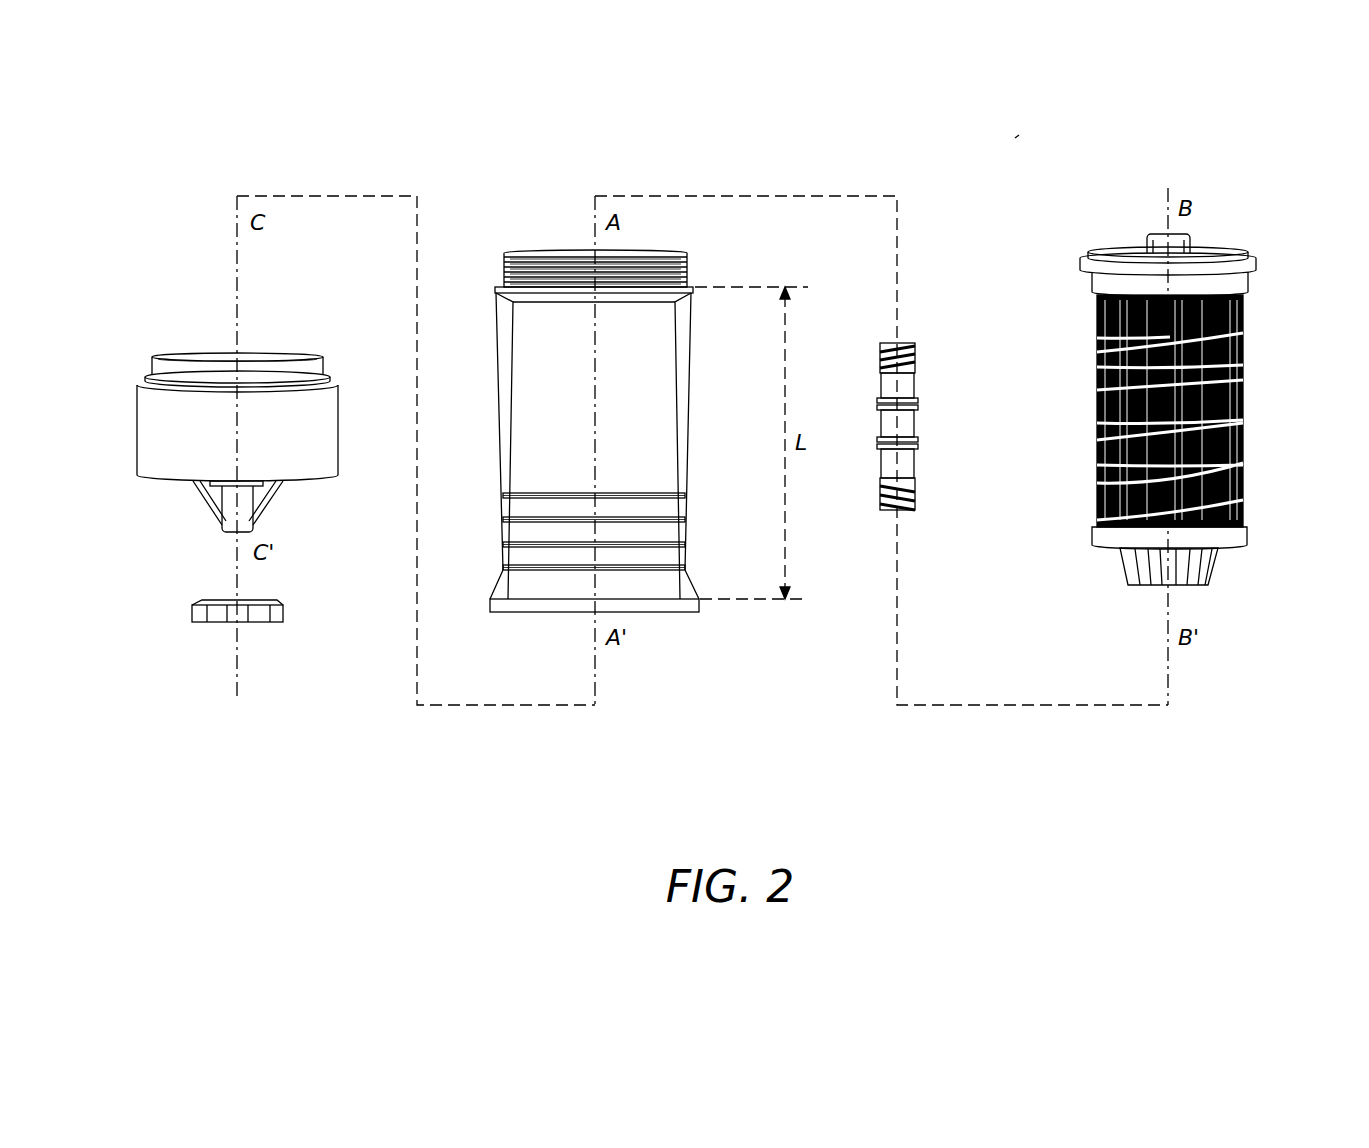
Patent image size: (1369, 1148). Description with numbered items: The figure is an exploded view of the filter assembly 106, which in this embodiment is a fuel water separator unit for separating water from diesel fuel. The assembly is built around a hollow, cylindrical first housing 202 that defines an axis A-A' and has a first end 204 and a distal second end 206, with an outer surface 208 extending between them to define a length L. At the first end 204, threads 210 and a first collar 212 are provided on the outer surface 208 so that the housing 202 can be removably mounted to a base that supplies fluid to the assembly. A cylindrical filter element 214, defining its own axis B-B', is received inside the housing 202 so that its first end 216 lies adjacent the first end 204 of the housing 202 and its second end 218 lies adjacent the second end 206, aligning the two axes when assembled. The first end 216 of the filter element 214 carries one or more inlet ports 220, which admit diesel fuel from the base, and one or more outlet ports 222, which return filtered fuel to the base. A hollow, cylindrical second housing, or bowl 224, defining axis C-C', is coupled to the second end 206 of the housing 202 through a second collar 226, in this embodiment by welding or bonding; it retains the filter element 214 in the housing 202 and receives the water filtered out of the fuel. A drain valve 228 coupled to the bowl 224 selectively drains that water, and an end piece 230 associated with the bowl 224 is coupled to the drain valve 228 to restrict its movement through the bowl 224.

The filter assembly 106 is at (1018, 135).
The first housing 202 is at (605, 419).
The first end 204 is at (606, 262).
The second end 206 is at (694, 578).
The outer surface 208 is at (665, 418).
The threads 210 is at (505, 262).
The first collar 212 is at (495, 290).
The filter element 214 is at (1184, 394).
The first end 216 is at (1264, 258).
The second end 218 is at (1257, 533).
The inlet ports 220 is at (1100, 248).
The outlet ports 222 is at (1196, 242).
The second housing 224 is at (166, 335).
The second collar 226 is at (490, 605).
The drain valve 228 is at (924, 427).
The end piece 230 is at (176, 602).